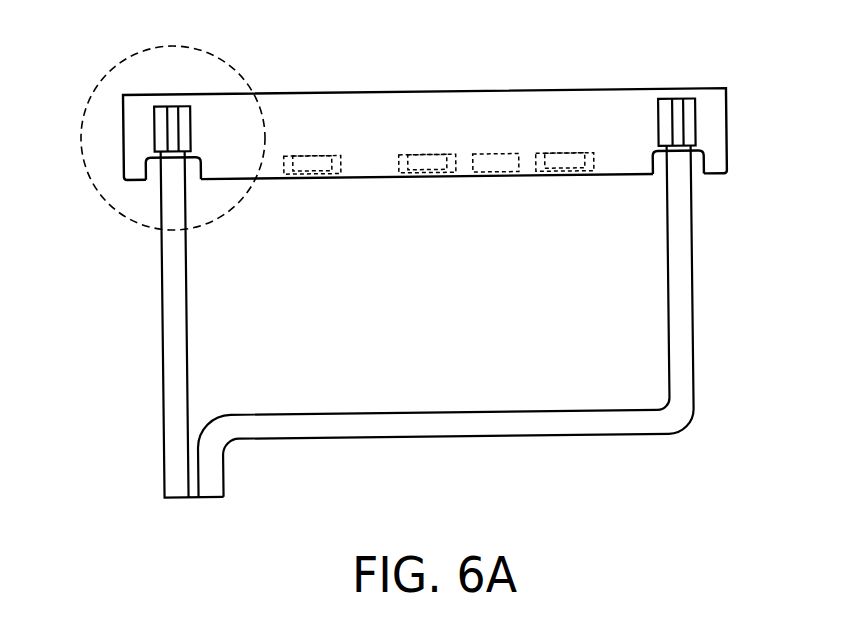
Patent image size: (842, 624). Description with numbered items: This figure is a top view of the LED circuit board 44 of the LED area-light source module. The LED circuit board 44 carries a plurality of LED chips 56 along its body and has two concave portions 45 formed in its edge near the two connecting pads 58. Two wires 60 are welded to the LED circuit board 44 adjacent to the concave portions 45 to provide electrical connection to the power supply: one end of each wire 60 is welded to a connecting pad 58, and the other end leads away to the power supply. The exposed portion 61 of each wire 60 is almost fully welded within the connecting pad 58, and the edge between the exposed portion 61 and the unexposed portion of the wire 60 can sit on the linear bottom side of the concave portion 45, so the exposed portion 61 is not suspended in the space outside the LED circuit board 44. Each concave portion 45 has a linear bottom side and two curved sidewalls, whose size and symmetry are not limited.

The LED circuit board 44 is at (368, 112).
The concave portion 45 is at (158, 172).
The LED chip 56 is at (310, 160).
The connecting pad 58 is at (185, 117).
The wire 60 is at (170, 328).
The exposed portion 61 is at (172, 133).